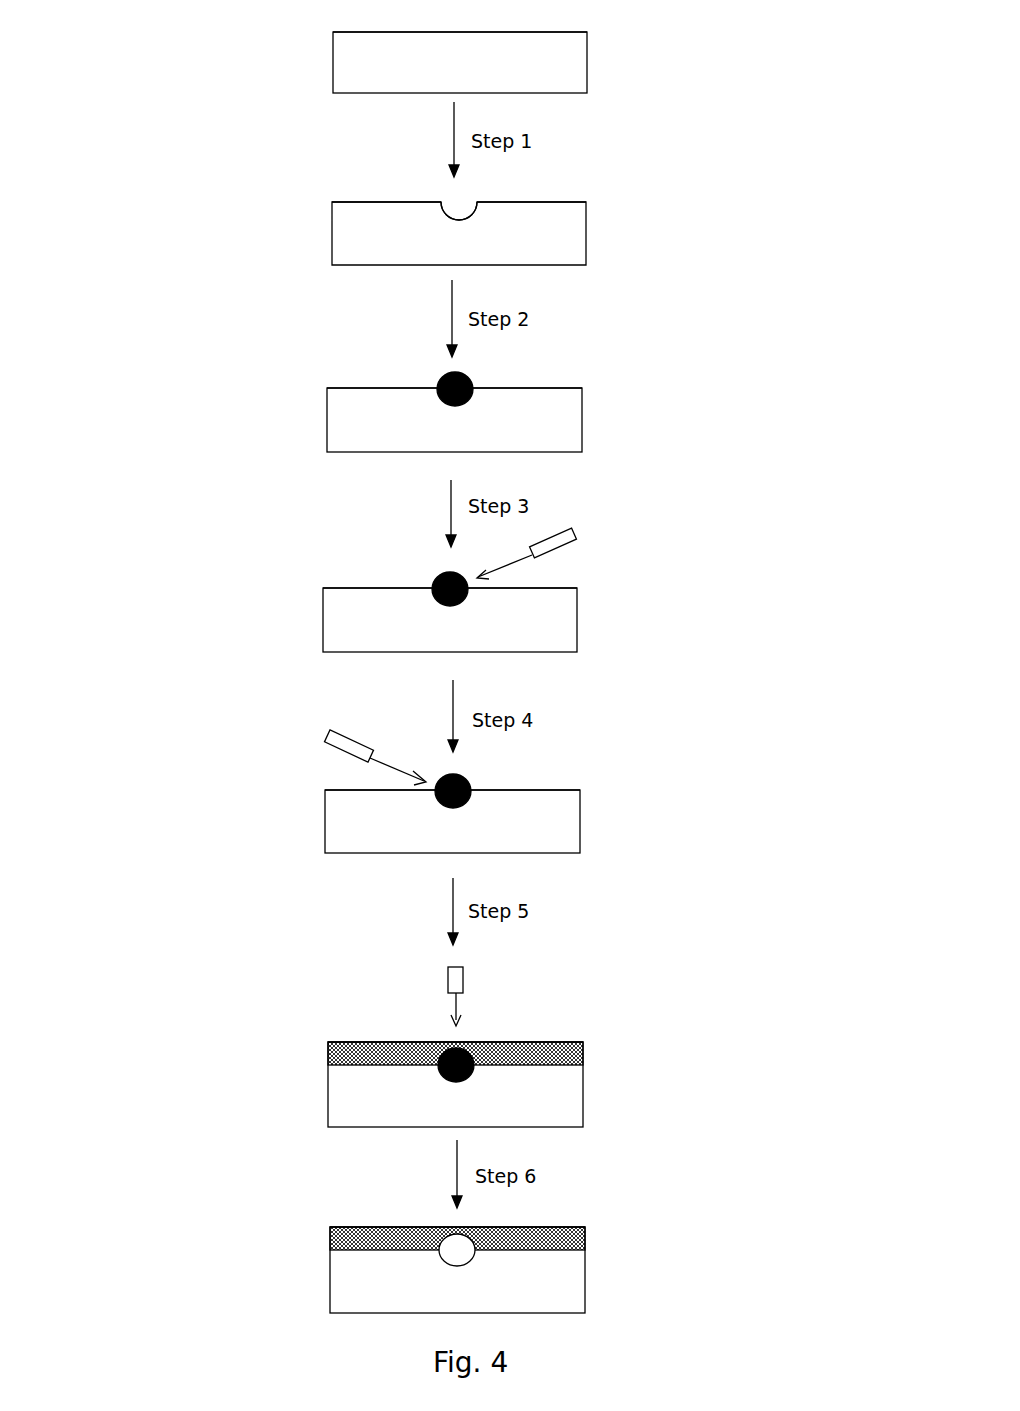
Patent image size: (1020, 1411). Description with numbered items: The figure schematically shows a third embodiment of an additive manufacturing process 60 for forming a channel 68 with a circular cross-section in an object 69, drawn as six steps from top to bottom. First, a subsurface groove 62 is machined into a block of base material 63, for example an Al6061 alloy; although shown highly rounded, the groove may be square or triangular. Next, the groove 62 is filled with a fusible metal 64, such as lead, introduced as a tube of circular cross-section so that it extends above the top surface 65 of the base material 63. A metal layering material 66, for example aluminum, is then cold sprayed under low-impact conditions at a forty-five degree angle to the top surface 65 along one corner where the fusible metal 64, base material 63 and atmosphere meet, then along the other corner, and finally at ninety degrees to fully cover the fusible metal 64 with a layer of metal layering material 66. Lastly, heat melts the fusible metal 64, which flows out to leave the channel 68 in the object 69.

The additive manufacturing process 60 is at (176, 199).
The subsurface groove 62 is at (459, 208).
The block of base material 63 is at (583, 80).
The fusible metal 64 is at (446, 374).
The top surface 65 is at (544, 31).
The metal layering material 66 is at (470, 586).
The channel 68 is at (455, 1250).
The object 69 is at (276, 1277).